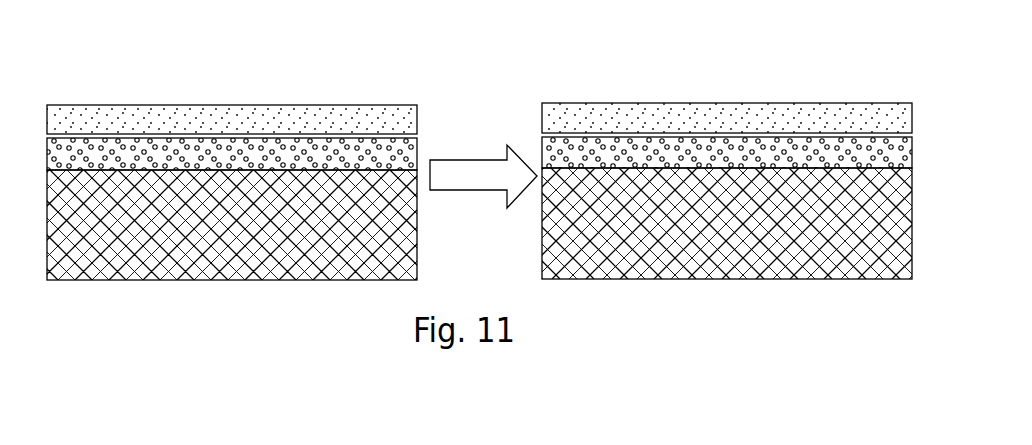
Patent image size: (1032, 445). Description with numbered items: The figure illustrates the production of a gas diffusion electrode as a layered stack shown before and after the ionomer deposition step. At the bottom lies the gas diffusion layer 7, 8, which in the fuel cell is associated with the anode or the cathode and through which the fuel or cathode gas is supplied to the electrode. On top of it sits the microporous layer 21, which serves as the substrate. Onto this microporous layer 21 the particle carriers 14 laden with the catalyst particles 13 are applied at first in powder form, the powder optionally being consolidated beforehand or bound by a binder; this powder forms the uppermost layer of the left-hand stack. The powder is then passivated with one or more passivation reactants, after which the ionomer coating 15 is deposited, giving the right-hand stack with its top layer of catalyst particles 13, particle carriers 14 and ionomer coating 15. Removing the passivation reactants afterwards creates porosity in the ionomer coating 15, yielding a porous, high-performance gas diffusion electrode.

The gas diffusion layer 7 is at (510, 260).
The gas diffusion layer 8 is at (114, 258).
The catalyst particles 13 is at (479, 92).
The particle carriers 14 is at (278, 120).
The ionomer coating 15 is at (683, 118).
The microporous layer 21 is at (552, 155).